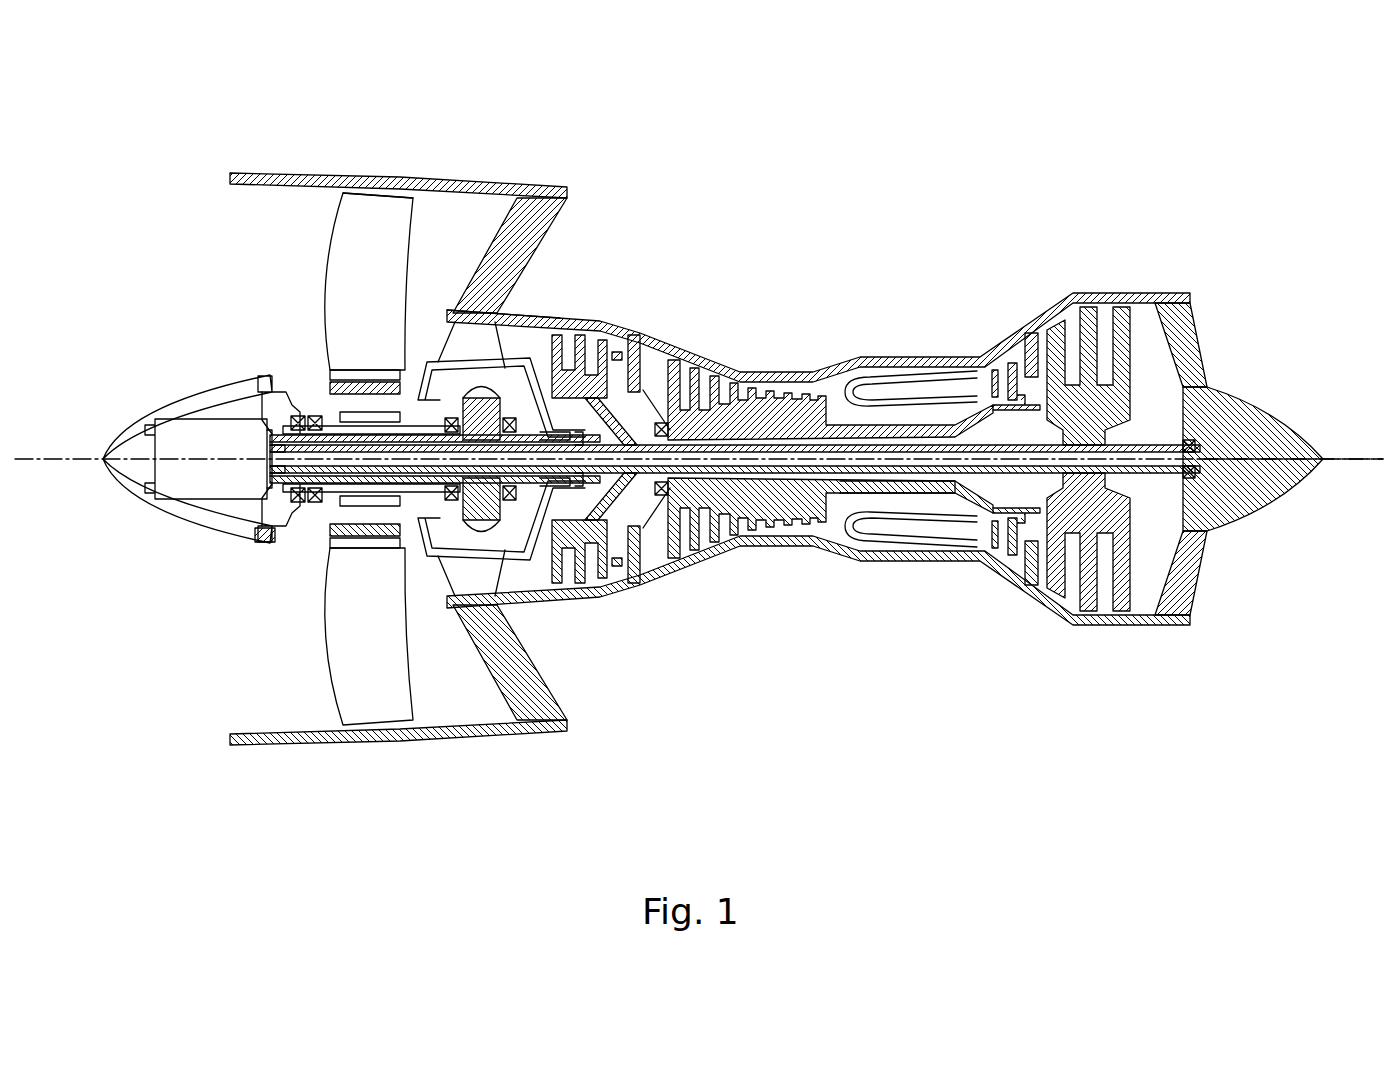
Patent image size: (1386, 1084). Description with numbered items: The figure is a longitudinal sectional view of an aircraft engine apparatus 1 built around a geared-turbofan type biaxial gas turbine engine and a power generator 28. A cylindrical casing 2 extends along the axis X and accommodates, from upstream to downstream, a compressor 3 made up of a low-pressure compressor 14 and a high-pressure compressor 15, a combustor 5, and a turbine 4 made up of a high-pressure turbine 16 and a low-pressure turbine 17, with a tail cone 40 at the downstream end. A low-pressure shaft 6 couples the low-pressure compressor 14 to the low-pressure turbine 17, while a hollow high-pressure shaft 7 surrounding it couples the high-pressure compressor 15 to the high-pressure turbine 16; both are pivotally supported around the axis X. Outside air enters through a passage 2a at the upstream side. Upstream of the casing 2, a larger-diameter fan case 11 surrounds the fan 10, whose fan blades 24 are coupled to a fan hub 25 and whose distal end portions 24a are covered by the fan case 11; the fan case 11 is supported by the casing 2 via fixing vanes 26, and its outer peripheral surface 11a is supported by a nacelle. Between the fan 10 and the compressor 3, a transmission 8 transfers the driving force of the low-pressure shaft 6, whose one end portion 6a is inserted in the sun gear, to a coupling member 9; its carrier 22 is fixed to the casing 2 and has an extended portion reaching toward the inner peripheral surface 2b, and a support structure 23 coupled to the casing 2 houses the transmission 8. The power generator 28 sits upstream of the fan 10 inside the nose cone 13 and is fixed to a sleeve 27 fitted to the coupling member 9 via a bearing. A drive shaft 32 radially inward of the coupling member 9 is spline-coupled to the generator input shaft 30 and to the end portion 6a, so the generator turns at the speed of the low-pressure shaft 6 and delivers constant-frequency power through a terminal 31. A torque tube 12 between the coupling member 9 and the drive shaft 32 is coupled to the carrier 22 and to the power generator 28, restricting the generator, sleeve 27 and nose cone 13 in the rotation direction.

The aircraft engine apparatus 1 is at (1152, 185).
The casing 2 is at (672, 360).
The passage 2a is at (447, 325).
The inner peripheral surface 2b is at (615, 330).
The compressor 3 is at (782, 640).
The turbine 4 is at (1085, 675).
The combustor 5 is at (920, 362).
The low-pressure shaft 6 is at (990, 445).
The one end portion of the low-pressure shaft 6a is at (452, 365).
The high-pressure shaft 7 is at (930, 548).
The transmission 8 is at (575, 318).
The coupling member 9 is at (430, 600).
The fan 10 is at (275, 288).
The fan case 11 is at (292, 165).
The outer peripheral surface 11a is at (437, 187).
The torque tube 12 is at (425, 360).
The nose cone 13 is at (104, 440).
The low-pressure compressor 14 is at (625, 598).
The high-pressure compressor 15 is at (690, 558).
The high-pressure turbine 16 is at (1010, 585).
The low-pressure turbine 17 is at (1045, 610).
The carrier 22 is at (500, 562).
The support structure 23 is at (545, 600).
The fan blades 24 is at (328, 340).
The distal end portion 24a is at (383, 192).
The fan hub 25 is at (322, 395).
The fixing vanes 26 is at (577, 712).
The sleeve 27 is at (280, 555).
The power generator 28 is at (193, 408).
The generator input shaft 30 is at (257, 535).
The terminal 31 is at (147, 395).
The drive shaft 32 is at (312, 540).
The tail cone 40 is at (1262, 497).
The axis X is at (1262, 470).